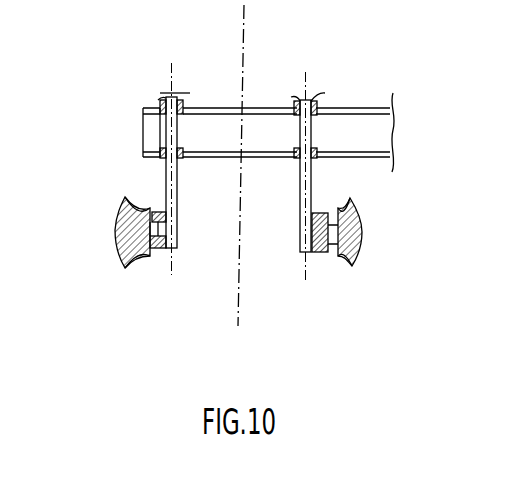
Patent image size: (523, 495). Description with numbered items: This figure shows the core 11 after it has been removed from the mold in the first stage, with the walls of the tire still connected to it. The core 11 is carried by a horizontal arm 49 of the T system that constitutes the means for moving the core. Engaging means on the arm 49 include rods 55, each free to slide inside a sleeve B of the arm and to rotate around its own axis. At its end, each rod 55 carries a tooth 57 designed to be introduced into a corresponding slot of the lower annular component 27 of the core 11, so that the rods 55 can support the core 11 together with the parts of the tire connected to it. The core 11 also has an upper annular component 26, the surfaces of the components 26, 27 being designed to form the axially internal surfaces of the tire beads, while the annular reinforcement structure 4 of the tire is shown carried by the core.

The sleeve B is at (162, 102).
The horizontal arm 49 is at (368, 125).
The rod 55 is at (176, 200).
The tooth 57 is at (307, 252).
The annular reinforcement structure 4 is at (118, 243).
The lower annular component 27 is at (156, 211).
The upper annular component 26 is at (157, 255).
The core 11 is at (358, 242).